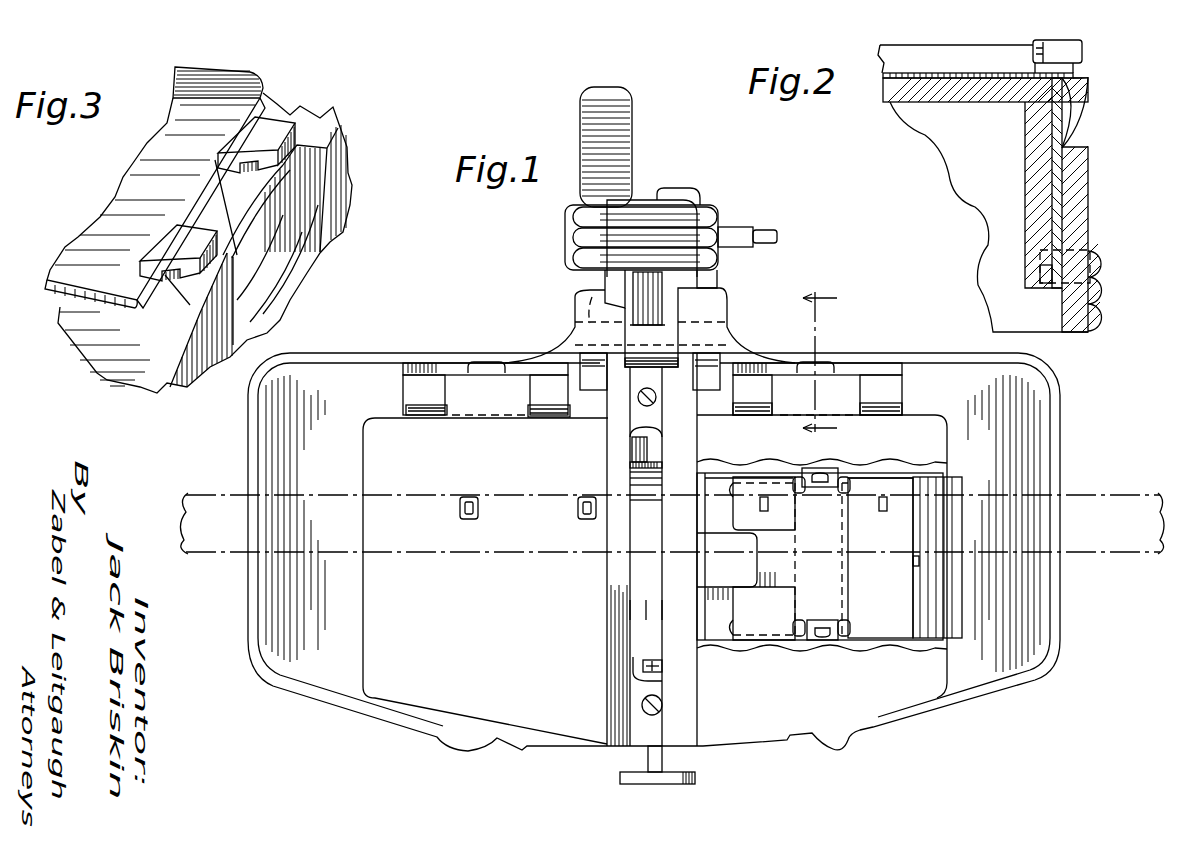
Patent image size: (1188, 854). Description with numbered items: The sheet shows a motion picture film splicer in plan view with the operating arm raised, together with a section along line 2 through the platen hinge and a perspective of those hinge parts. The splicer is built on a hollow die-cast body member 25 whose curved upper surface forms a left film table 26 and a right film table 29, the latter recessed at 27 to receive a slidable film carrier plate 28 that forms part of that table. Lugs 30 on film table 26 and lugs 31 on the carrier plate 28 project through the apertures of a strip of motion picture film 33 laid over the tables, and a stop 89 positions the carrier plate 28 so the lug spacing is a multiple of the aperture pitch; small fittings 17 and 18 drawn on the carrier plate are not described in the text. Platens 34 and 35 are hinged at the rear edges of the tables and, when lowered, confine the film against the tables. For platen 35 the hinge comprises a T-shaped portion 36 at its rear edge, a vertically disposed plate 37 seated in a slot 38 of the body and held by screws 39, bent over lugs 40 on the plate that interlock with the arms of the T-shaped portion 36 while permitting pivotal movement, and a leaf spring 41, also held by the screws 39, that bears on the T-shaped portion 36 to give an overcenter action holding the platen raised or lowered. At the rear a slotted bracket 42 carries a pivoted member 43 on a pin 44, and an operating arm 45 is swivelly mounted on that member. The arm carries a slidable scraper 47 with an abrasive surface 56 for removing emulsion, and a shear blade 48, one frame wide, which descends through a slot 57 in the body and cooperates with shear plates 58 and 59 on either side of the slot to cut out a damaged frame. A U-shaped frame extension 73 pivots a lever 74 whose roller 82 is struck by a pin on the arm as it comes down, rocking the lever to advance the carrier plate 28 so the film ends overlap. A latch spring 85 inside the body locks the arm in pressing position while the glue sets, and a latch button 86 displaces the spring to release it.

In FIG. 1, the section line 2 is at (820, 362).
In FIG. 1, the lower bearing pedestal 17 is at (825, 622).
In FIG. 1, the upper bearing pedestal 18 is at (820, 488).
In FIG. 1, the body member 25 is at (712, 746).
In FIG. 2, the body member 25 is at (1003, 100).
In FIG. 3, the body member 25 is at (140, 368).
In FIG. 1, the film table 26 is at (343, 680).
In FIG. 1, the recess 27 is at (950, 478).
In FIG. 1, the film carrier plate 28 is at (884, 600).
In FIG. 1, the film table 29 is at (992, 683).
In FIG. 1, the lugs 30 is at (470, 498).
In FIG. 1, the lugs 31 is at (762, 512).
In FIG. 1, the strip of motion picture film 33 is at (1126, 492).
In FIG. 1, the platen 34 is at (498, 626).
In FIG. 1, the platen 35 is at (815, 694).
In FIG. 3, the platen 35 is at (183, 174).
In FIG. 1, the T-shaped portion 36 is at (455, 378).
In FIG. 2, the T-shaped portion 36 is at (1068, 70).
In FIG. 3, the T-shaped portion 36 is at (237, 204).
In FIG. 2, the vertically disposed plate 37 is at (1058, 100).
In FIG. 3, the vertically disposed plate 37 is at (205, 300).
In FIG. 2, the slot 38 is at (1072, 141).
In FIG. 2, the screws 39 is at (1040, 268).
In FIG. 1, the bent over lugs 40 is at (424, 414).
In FIG. 2, the bent over lugs 40 is at (1078, 50).
In FIG. 3, the bent over lugs 40 is at (282, 130).
In FIG. 1, the leaf spring 41 is at (488, 362).
In FIG. 2, the leaf spring 41 is at (1068, 117).
In FIG. 3, the leaf spring 41 is at (250, 282).
In FIG. 1, the slotted bracket 42 is at (680, 313).
In FIG. 1, the pivoted member 43 is at (664, 343).
In FIG. 1, the pin 44 is at (578, 303).
In FIG. 1, the operating arm 45 is at (660, 193).
In FIG. 1, the slidable scraper 47 is at (595, 125).
In FIG. 1, the shear blade 48 is at (650, 308).
In FIG. 1, the roughened or abrasive surface 56 is at (605, 290).
In FIG. 1, the slot 57 is at (630, 576).
In FIG. 1, the shear plate 58 is at (632, 598).
In FIG. 1, the shear plate 59 is at (645, 612).
In FIG. 1, the extension 73 is at (645, 497).
In FIG. 1, the lever 74 is at (642, 440).
In FIG. 1, the roller 82 is at (634, 445).
In FIG. 1, the latch spring 85 is at (642, 666).
In FIG. 1, the latch button 86 is at (620, 778).
In FIG. 1, the stop 89 is at (912, 562).